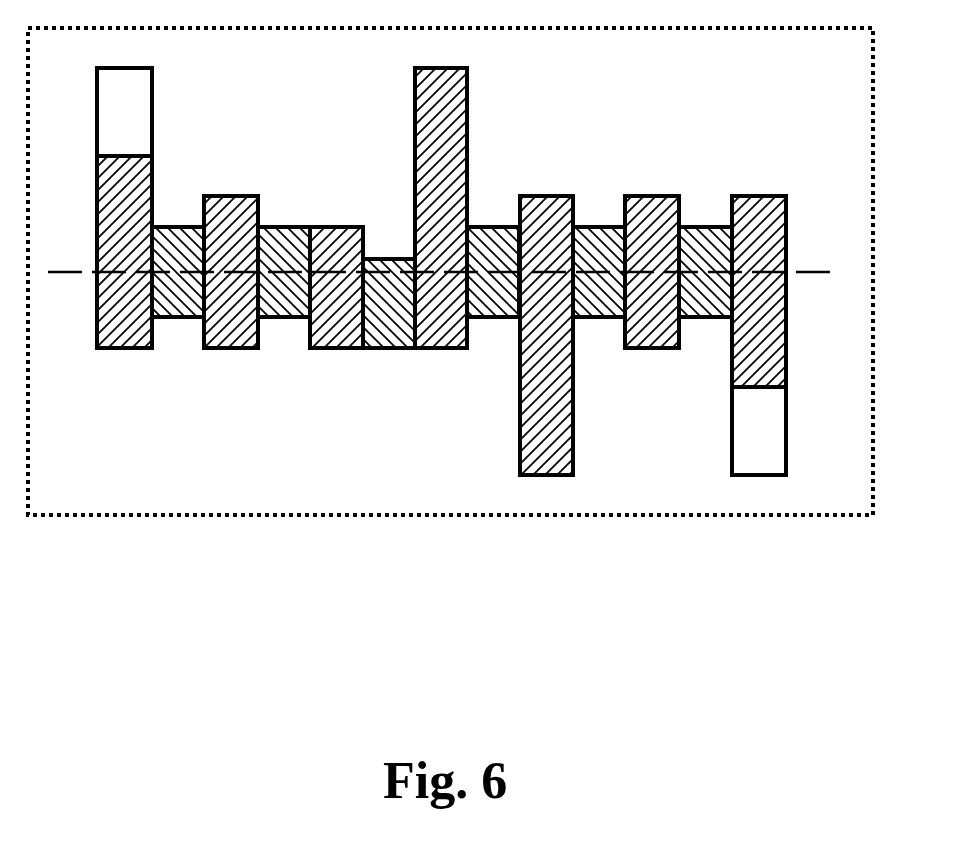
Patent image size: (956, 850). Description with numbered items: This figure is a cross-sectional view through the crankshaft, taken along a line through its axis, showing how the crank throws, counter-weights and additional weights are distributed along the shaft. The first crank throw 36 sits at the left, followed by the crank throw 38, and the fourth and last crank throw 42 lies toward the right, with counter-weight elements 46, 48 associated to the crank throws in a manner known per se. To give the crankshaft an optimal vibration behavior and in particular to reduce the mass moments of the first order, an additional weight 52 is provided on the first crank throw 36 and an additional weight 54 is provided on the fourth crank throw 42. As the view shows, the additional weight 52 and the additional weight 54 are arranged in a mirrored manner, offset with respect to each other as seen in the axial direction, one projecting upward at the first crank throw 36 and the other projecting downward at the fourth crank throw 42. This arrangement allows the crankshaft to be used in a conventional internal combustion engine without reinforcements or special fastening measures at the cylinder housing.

The first crank throw 36 is at (178, 293).
The crank throw 38 is at (385, 325).
The fourth crank throw 42 is at (706, 288).
The counter-weight element 46 is at (447, 325).
The counter-weight element 48 is at (547, 427).
The additional weight 52 is at (120, 317).
The additional weight 54 is at (763, 462).